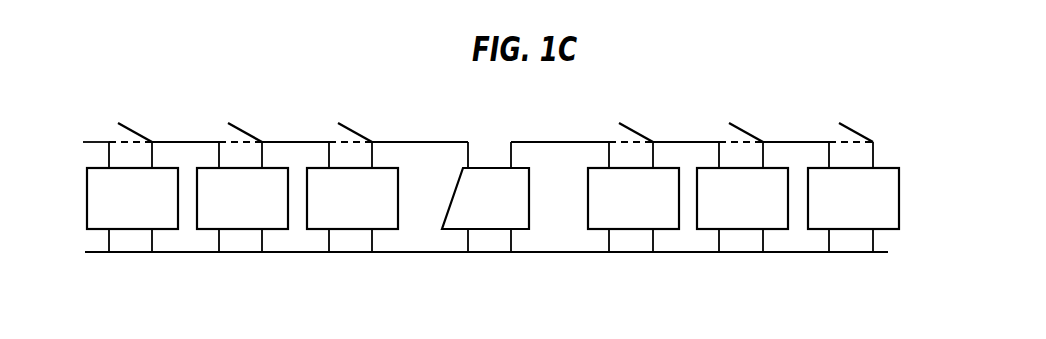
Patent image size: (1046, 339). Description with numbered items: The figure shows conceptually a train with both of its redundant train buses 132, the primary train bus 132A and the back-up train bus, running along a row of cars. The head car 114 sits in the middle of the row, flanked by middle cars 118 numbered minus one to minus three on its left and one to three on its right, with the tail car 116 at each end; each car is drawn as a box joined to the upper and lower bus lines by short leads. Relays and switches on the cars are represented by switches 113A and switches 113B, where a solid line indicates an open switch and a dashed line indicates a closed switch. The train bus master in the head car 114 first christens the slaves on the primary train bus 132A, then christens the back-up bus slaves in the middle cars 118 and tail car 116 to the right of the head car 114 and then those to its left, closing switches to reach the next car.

The switches 113A is at (130, 253).
The switches 113B is at (140, 130).
The head car 114 is at (483, 168).
The tail car 116 is at (157, 167).
The middle cars 118 is at (267, 167).
The redundant train buses 132 is at (804, 142).
The primary train bus 132A is at (565, 253).